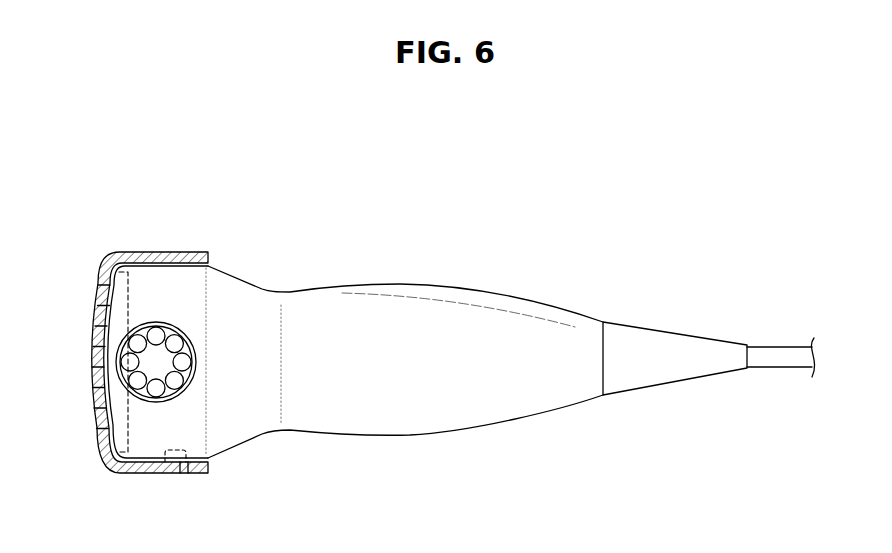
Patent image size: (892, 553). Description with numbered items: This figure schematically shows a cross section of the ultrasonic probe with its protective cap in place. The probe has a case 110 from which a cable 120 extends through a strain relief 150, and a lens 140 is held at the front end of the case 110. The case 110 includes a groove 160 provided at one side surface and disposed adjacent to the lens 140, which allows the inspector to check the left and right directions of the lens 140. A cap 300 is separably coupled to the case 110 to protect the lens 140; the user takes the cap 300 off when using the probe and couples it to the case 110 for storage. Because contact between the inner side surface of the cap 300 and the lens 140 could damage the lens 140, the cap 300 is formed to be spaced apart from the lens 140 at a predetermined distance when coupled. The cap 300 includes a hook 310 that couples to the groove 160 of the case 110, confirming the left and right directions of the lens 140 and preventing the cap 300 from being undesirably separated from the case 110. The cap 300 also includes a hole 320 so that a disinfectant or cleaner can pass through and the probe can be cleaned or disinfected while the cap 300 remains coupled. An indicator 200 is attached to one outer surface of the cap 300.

The case 110 is at (398, 322).
The cable 120 is at (773, 352).
The lens 140 is at (120, 414).
The strain relief 150 is at (660, 352).
The groove 160 is at (186, 452).
The indicator 200 is at (153, 357).
The cap 300 is at (128, 252).
The hook 310 is at (175, 455).
The hole 320 is at (100, 277).